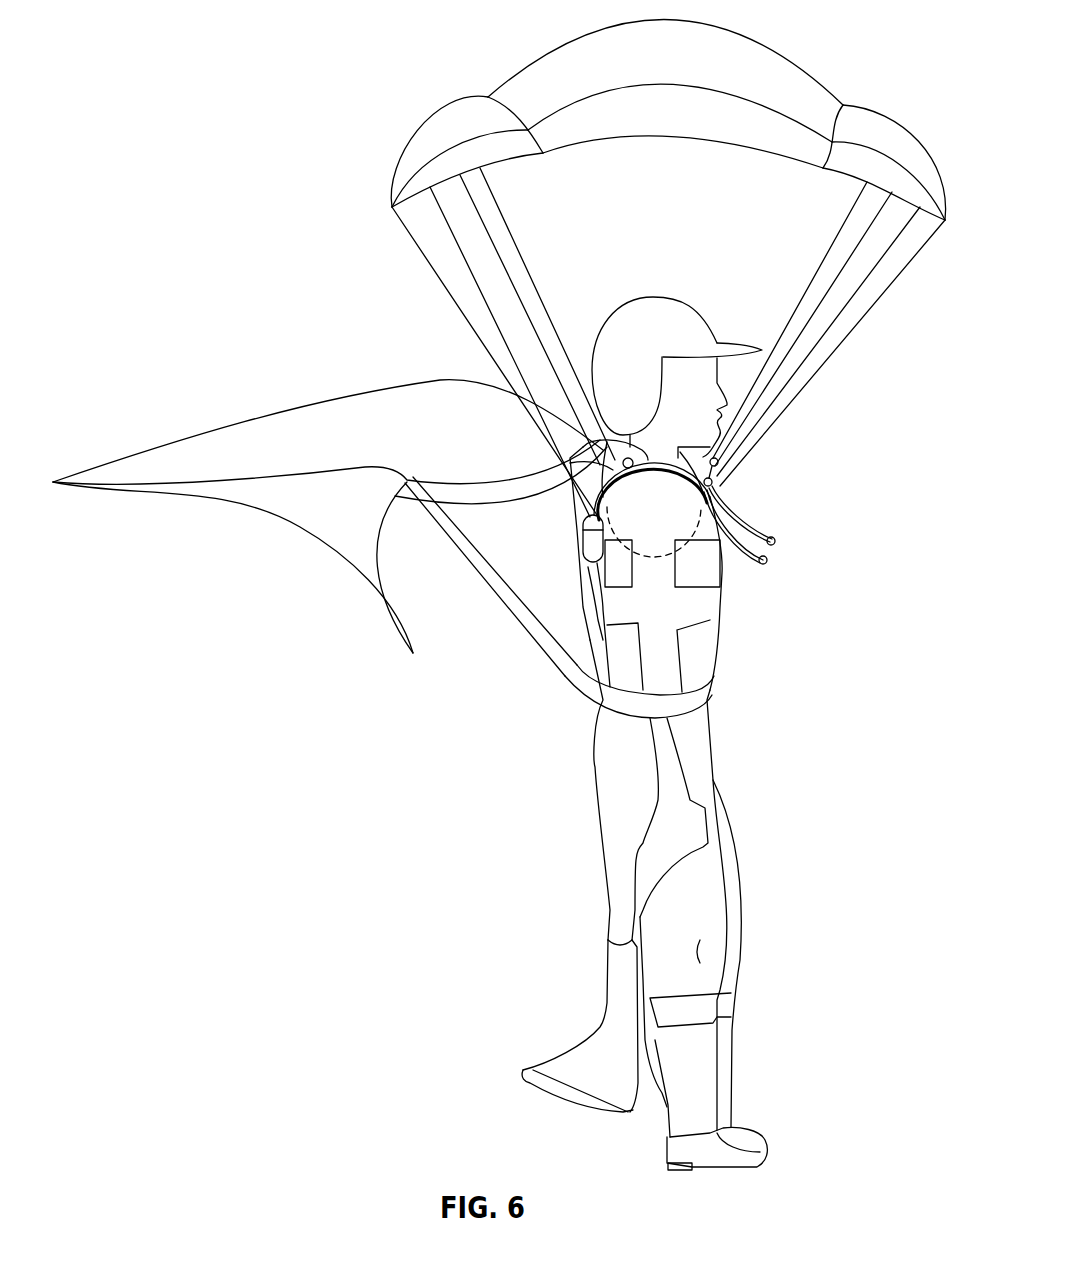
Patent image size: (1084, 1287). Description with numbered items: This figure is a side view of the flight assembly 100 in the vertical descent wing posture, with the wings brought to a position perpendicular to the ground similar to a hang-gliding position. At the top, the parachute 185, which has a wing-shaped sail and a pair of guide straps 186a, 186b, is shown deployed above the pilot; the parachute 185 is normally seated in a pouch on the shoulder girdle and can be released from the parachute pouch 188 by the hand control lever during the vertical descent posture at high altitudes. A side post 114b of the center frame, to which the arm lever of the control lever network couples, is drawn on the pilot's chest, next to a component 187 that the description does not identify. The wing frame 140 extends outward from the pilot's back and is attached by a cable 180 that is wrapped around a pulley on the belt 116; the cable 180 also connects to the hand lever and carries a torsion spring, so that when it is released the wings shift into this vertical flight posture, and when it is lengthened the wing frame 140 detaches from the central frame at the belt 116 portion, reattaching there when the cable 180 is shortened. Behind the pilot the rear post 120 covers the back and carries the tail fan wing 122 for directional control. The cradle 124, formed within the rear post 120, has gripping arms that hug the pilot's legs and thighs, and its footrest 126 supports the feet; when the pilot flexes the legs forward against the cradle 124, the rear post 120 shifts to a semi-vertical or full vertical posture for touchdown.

The personal flight system 100 is at (207, 362).
The parachute 185 is at (677, 59).
The wing frame 140 is at (450, 444).
The cable 180 is at (535, 643).
The belt 116 is at (697, 700).
The side post 114b is at (687, 618).
The parachute pouch 188 is at (580, 520).
The chest strap 187 is at (580, 568).
The guide strap 186a is at (757, 533).
The guide strap 186b is at (757, 570).
The rear post 120 is at (650, 784).
The cradle 124 is at (673, 790).
The tail fan wing 122 is at (615, 1053).
The footrest 126 is at (563, 1107).